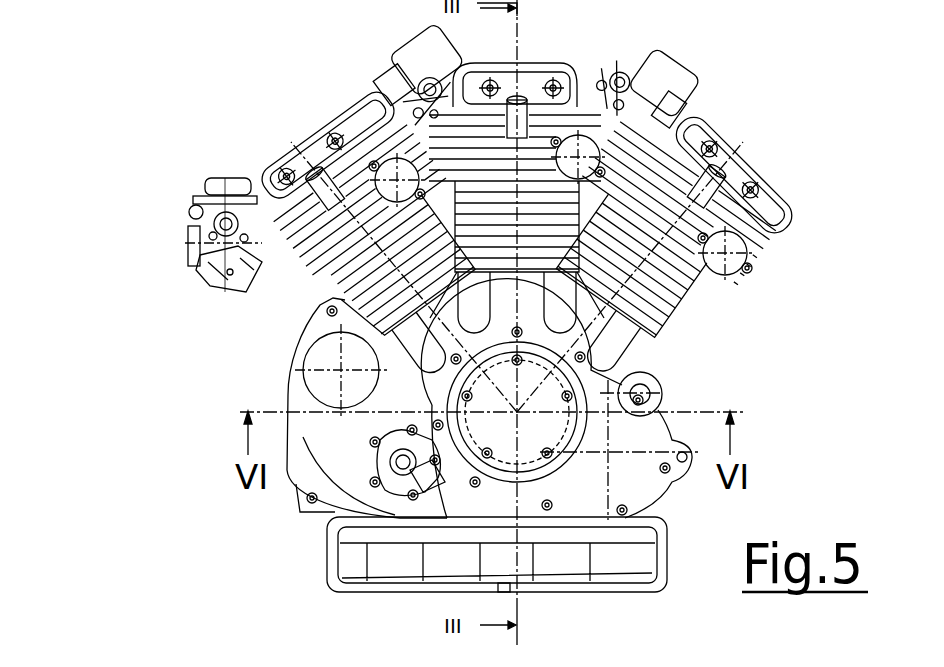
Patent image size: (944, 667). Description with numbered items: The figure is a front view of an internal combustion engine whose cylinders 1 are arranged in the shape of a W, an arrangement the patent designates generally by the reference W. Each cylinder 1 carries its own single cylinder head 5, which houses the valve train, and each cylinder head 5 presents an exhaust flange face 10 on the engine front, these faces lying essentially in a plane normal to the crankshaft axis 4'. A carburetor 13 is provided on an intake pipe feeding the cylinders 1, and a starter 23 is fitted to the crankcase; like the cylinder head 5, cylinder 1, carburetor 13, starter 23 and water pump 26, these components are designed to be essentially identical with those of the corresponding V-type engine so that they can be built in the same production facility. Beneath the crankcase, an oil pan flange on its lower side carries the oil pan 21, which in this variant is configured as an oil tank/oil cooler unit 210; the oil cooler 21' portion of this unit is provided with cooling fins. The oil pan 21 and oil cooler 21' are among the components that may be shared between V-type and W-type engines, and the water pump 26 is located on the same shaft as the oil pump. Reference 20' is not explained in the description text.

The W-type cylinder arrangement W is at (742, 133).
The cylinder 1 is at (690, 301).
The cylinder head 5 is at (786, 228).
The exhaust flange face 10 is at (378, 175).
The carburetor 13 is at (238, 186).
The crankcase cover 20' is at (341, 408).
The starter 23 is at (662, 389).
The crankshaft axis 4' is at (517, 412).
The water pump 26 is at (380, 468).
The oil tank/oil cooler unit 210 is at (318, 552).
The oil pan 21 is at (469, 578).
The oil cooler 21' is at (531, 555).